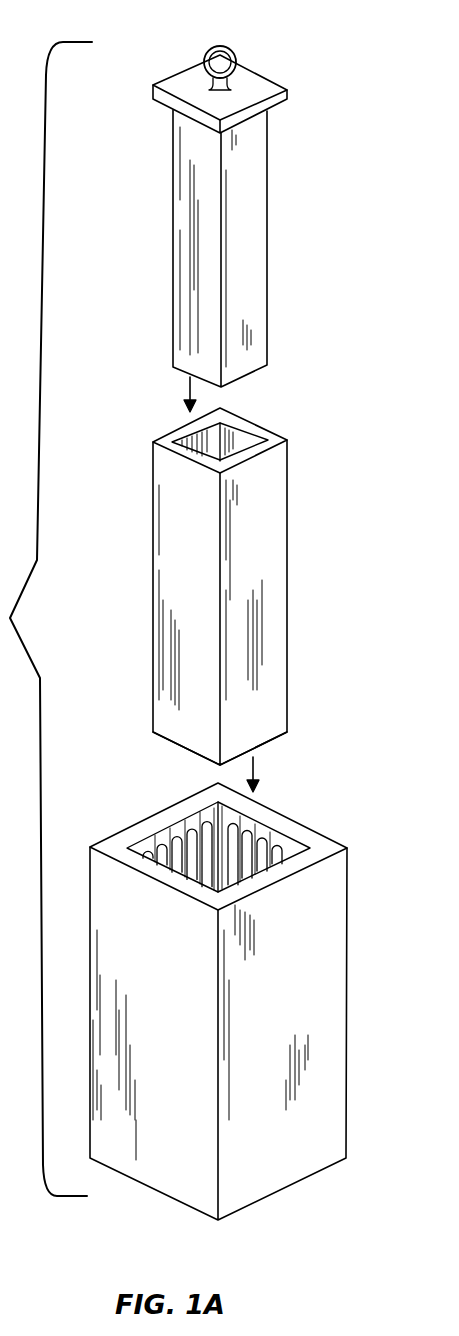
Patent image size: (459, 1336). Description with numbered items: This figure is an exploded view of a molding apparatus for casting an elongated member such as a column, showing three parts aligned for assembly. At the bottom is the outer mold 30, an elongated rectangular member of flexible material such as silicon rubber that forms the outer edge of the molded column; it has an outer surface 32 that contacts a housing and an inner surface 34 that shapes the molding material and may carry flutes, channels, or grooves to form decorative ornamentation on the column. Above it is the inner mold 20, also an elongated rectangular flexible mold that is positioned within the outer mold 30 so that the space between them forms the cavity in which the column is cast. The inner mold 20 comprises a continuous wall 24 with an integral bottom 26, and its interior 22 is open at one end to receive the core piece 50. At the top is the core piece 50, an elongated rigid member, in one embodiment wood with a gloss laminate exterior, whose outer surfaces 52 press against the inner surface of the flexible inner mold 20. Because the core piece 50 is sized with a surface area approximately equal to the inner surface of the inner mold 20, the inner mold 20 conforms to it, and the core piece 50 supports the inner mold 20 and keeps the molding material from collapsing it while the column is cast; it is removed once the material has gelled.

The inner mold 20 is at (275, 535).
The interior 22 is at (234, 443).
The continuous wall 24 is at (273, 443).
The integral bottom 26 is at (265, 745).
The outer mold 30 is at (280, 1170).
The outer surface 32 is at (307, 825).
The inner surface 34 is at (293, 843).
The core piece 50 is at (245, 153).
The outer surfaces 52 is at (249, 183).